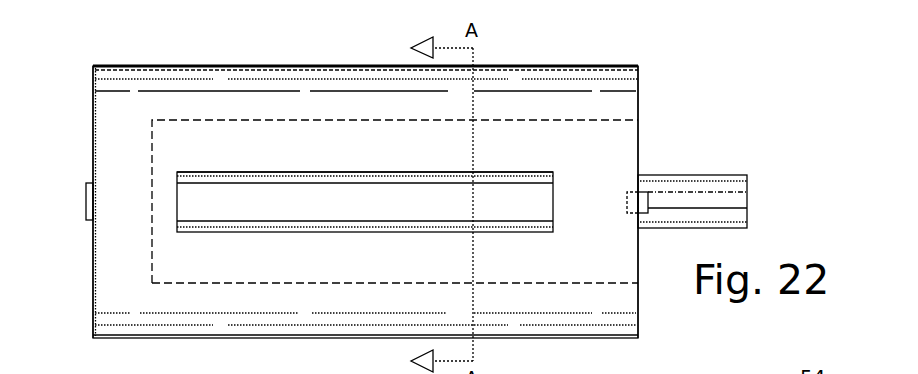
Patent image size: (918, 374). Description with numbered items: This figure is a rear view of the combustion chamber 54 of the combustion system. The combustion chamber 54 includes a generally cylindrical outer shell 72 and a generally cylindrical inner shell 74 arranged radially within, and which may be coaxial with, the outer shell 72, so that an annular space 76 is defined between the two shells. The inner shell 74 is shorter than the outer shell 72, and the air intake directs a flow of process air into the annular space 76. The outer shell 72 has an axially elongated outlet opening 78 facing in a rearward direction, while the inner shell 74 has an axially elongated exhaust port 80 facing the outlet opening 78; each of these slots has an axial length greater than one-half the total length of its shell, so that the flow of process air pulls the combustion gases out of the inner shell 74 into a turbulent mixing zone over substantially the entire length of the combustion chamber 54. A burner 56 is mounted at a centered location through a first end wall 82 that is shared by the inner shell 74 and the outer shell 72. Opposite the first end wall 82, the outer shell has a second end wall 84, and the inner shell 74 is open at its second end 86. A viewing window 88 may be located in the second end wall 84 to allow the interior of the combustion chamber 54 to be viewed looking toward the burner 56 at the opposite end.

The combustion chamber 54 is at (578, 56).
The burner 56 is at (683, 175).
The outer shell 72 is at (246, 65).
The inner shell 74 is at (233, 121).
The annular space 76 is at (408, 113).
The outlet opening 78 is at (380, 173).
The exhaust port 80 is at (290, 186).
The first end wall 82 is at (638, 132).
The second end wall 84 is at (93, 138).
The second end 86 is at (148, 255).
The viewing window 88 is at (86, 200).